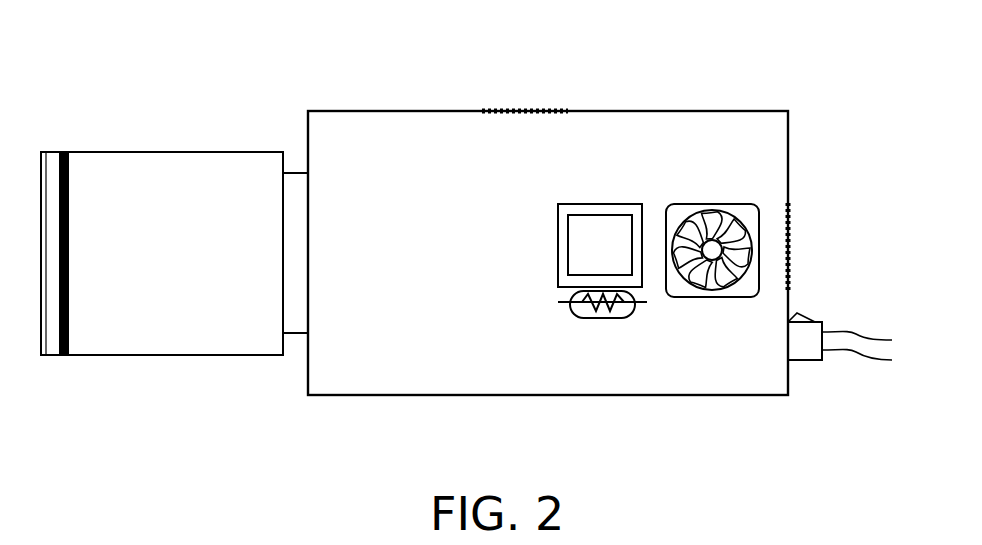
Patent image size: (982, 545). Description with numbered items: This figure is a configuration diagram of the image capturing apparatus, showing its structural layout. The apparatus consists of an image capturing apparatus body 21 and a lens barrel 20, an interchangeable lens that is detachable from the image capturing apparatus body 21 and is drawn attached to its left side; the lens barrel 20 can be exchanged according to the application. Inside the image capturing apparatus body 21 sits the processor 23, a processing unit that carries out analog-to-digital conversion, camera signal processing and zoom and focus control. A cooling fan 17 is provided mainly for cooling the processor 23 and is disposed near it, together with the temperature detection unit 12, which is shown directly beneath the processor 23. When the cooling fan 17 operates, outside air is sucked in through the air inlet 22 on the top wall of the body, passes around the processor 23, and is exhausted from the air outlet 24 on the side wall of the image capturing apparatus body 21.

The temperature detection unit 12 is at (598, 318).
The cooling fan 17 is at (712, 297).
The lens barrel 20 is at (135, 152).
The image capturing apparatus body 21 is at (335, 111).
The air inlet 22 is at (500, 111).
The processor 23 is at (630, 204).
The air outlet 24 is at (790, 211).